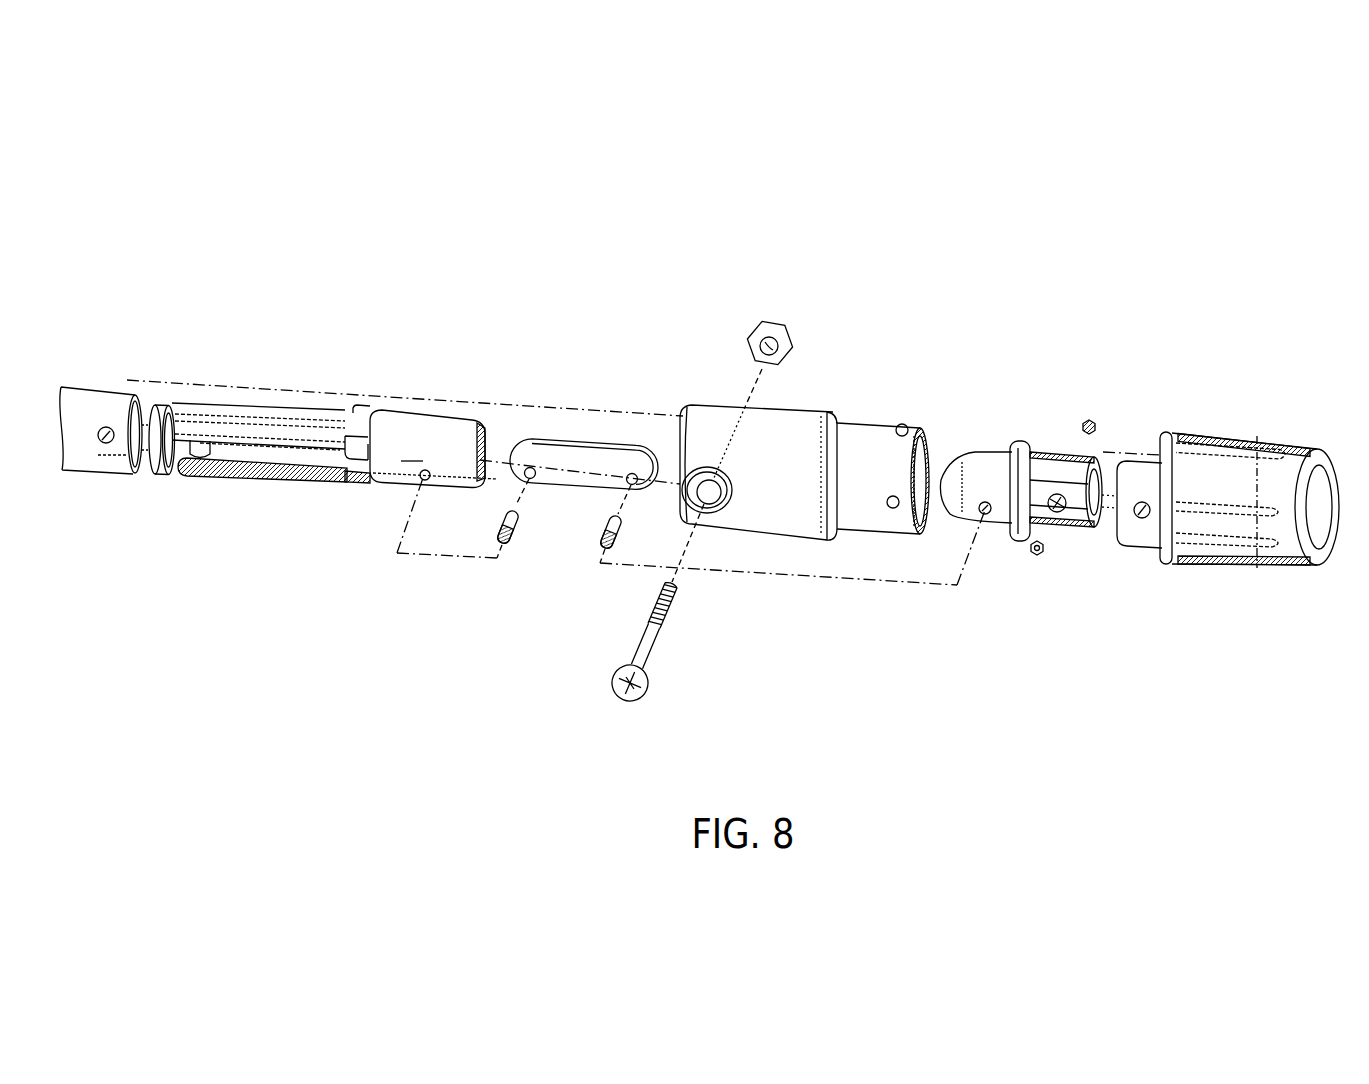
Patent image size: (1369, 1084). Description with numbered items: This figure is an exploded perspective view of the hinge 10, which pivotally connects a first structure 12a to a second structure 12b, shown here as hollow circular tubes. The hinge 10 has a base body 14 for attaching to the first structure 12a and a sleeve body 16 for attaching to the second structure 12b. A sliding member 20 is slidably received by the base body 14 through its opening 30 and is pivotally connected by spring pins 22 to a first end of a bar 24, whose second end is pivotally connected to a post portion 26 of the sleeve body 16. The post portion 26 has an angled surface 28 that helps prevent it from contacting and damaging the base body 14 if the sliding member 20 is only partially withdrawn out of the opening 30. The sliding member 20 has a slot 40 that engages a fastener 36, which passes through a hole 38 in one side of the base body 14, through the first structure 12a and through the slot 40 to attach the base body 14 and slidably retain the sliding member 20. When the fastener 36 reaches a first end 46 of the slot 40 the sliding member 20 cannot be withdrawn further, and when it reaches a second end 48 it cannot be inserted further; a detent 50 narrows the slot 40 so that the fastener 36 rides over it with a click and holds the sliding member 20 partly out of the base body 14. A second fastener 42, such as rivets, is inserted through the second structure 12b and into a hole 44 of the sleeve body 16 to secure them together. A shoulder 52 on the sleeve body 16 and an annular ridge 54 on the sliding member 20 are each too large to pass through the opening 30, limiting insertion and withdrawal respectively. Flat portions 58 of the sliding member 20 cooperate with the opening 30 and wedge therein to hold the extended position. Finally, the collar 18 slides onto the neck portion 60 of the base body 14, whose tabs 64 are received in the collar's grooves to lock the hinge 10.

The hinge 10 is at (1086, 202).
The first structure 12a is at (108, 400).
The second structure 12b is at (1140, 540).
The base body 14 is at (308, 626).
The sleeve body 16 is at (1246, 650).
The collar 18 is at (1300, 462).
The sliding member 20 is at (388, 482).
The spring pins 22 is at (517, 532).
The bar 24 is at (587, 457).
The post portion 26 is at (968, 457).
The angled surface 28 is at (950, 458).
The opening 30 is at (927, 517).
The fastener 36 is at (650, 692).
The hole 38 is at (712, 499).
The slot 40 is at (289, 478).
The second fastener 42 is at (1091, 419).
The hole 44 is at (1054, 495).
The first end 46 is at (184, 468).
The second end 48 is at (346, 450).
The detent 50 is at (204, 448).
The shoulder 52 is at (1024, 441).
The annular ridge 54 is at (425, 426).
The flat portions 58 is at (412, 448).
The neck portion 60 is at (819, 470).
The tabs 64 is at (900, 425).